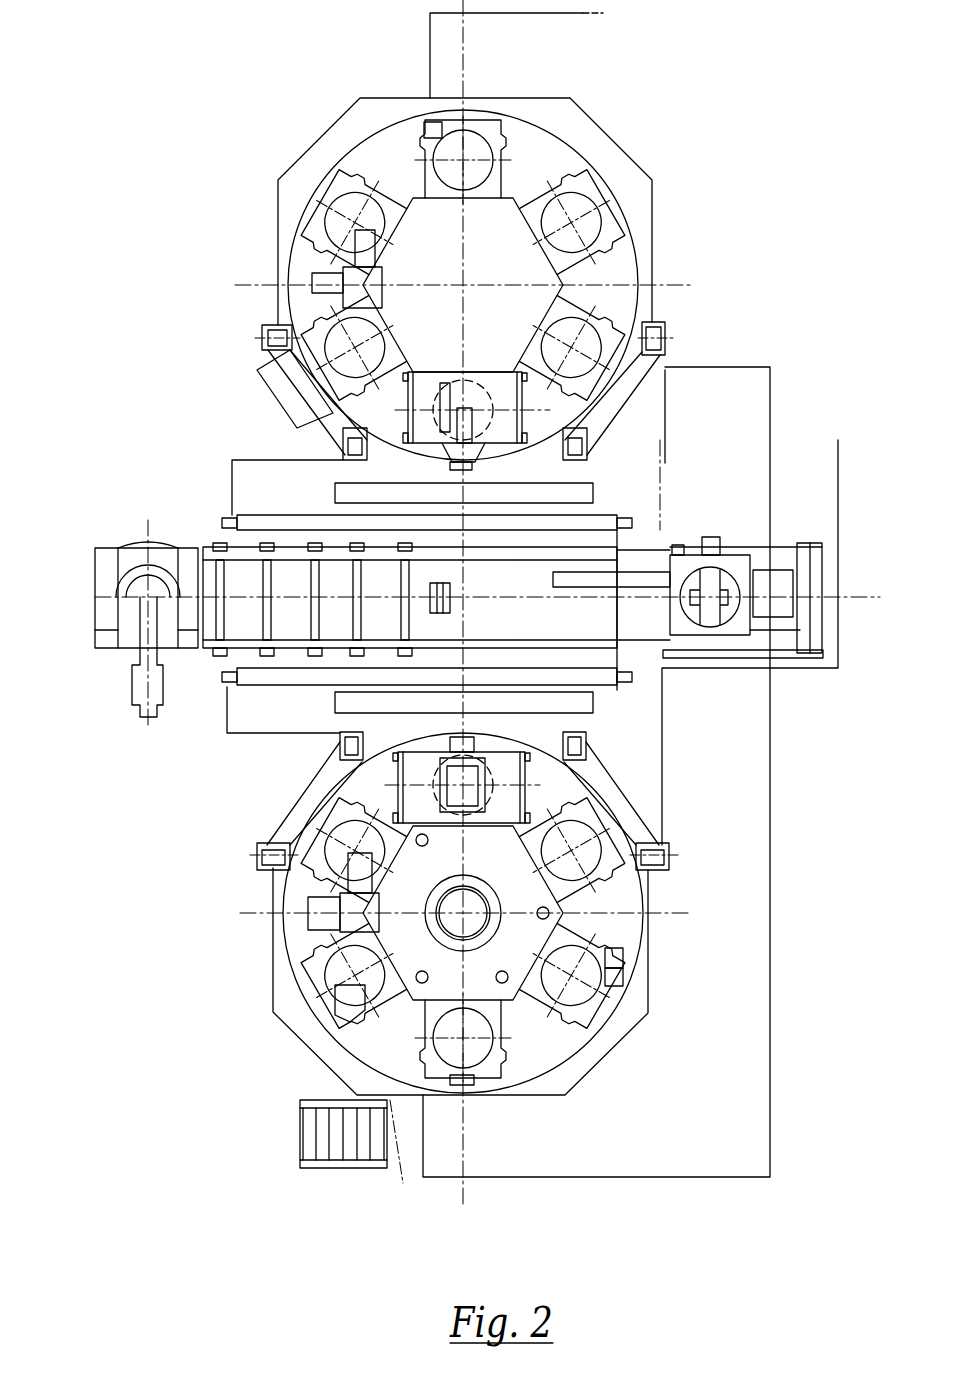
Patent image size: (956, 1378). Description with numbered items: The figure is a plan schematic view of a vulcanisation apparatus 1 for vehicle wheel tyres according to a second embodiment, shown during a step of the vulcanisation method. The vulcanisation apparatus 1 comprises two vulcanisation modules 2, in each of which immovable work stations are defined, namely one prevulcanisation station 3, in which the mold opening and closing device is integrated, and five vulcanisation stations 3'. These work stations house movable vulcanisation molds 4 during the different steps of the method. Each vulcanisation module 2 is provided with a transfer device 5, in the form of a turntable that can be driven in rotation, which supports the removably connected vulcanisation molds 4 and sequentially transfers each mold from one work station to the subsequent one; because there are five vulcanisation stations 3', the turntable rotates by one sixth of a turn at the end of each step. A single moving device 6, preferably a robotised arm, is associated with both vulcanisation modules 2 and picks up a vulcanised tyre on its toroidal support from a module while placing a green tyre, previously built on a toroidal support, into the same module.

The vulcanisation apparatus 1 is at (772, 185).
The vulcanisation module 2 is at (628, 110).
The prevulcanisation station 3 is at (603, 597).
The vulcanisation station 3' is at (462, 597).
The vulcanisation mold 4 is at (457, 142).
The transfer device 5 is at (312, 172).
The moving device 6 is at (102, 523).